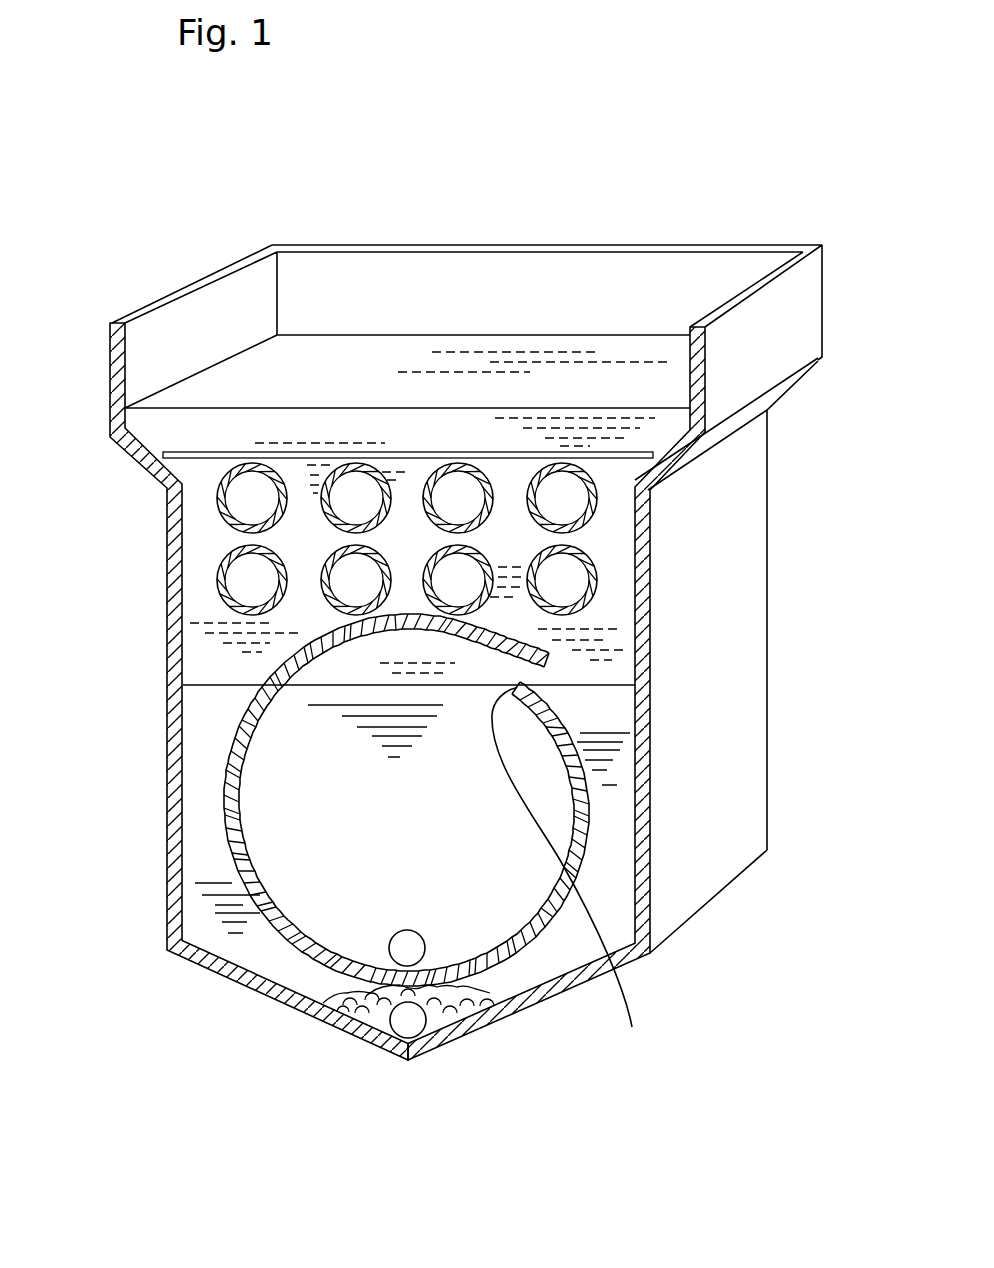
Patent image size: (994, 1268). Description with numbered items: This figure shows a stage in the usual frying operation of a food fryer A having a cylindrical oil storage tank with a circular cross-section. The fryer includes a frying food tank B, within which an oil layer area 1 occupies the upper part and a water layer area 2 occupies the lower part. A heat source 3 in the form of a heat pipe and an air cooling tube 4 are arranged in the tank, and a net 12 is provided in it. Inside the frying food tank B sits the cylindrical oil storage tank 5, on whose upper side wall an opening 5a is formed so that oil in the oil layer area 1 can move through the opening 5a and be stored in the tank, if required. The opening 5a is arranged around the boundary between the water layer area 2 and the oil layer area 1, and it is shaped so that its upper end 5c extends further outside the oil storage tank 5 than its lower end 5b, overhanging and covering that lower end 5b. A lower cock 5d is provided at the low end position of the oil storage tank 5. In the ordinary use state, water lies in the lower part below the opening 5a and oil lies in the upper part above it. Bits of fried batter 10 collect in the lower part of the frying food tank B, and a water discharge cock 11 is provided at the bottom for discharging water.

The oil layer area 1 is at (167, 420).
The water layer area 2 is at (212, 847).
The heat source 3 is at (218, 496).
The air cooling tube 4 is at (218, 578).
The cylindrical oil storage tank 5 is at (243, 715).
The opening 5a is at (530, 672).
The lower end of the opening 5b is at (574, 879).
The upper end of the opening 5c is at (548, 657).
The cock 5d is at (390, 945).
The bit of fried batter 10 is at (390, 1017).
The water discharge cock 11 is at (418, 1027).
The net 12 is at (185, 453).
The food fryer A is at (771, 158).
The frying food tank B is at (412, 313).